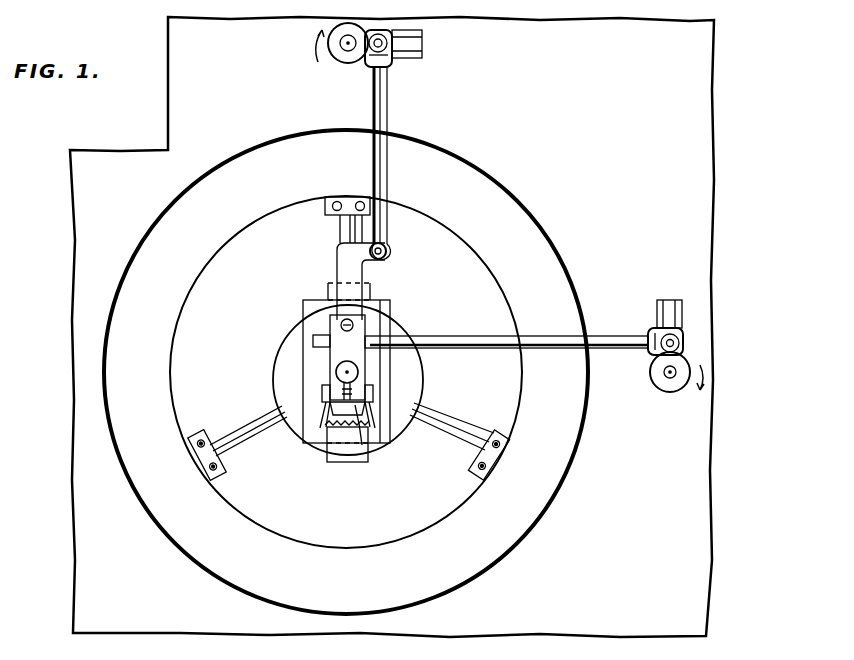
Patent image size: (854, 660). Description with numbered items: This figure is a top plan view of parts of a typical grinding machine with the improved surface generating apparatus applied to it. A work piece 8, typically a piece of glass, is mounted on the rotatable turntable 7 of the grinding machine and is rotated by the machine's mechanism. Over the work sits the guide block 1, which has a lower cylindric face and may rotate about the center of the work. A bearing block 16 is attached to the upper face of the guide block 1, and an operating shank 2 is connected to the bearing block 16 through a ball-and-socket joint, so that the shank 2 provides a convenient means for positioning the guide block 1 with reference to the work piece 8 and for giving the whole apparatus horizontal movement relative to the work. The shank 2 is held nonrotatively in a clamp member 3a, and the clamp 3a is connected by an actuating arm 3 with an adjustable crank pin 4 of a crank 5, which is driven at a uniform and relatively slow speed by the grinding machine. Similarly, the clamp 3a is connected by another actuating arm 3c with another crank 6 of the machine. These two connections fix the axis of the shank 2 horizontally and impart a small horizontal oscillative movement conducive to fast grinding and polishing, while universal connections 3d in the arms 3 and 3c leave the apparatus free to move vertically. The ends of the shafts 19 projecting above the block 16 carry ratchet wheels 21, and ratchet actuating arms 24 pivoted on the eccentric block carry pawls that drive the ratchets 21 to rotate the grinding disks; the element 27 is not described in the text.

The guide block 1 is at (388, 309).
The operating shank 2 is at (352, 371).
The actuating arm 3 is at (637, 346).
The clamp member 3a is at (342, 352).
The actuating arm 3c is at (390, 122).
The universal connection 3d is at (396, 67).
The adjustable crank pin 4 is at (675, 341).
The crank 5 is at (680, 308).
The crank 6 is at (422, 43).
The turntable 7 is at (487, 284).
The work piece 8 is at (392, 311).
The bearing block 16 is at (352, 455).
The shafts 19 is at (340, 404).
The ratchet wheels 21 is at (352, 410).
The ratchet actuating arms 24 is at (360, 420).
The lever 27 is at (361, 432).